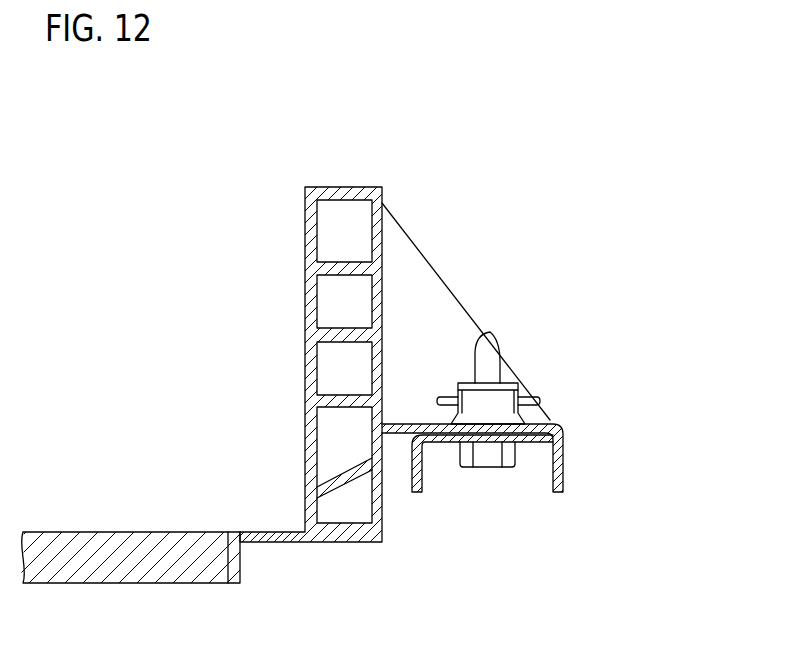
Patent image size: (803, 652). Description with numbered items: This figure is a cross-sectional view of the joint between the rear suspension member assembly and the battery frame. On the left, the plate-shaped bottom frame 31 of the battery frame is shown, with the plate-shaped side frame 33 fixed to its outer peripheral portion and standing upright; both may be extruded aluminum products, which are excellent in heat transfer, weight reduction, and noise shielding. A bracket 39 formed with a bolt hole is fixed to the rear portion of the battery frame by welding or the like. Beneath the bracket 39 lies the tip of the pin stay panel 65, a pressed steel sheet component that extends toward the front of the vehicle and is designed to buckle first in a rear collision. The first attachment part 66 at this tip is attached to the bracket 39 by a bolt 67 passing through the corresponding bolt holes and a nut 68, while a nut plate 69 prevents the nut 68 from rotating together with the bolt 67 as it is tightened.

The bottom frame 31 is at (142, 572).
The side frame 33 is at (303, 333).
The bracket 39 is at (556, 417).
The pin stay panel 65 is at (563, 465).
The first attachment part 66 is at (597, 268).
The bolt 67 is at (488, 458).
The nut 68 is at (508, 402).
The nut plate 69 is at (538, 400).